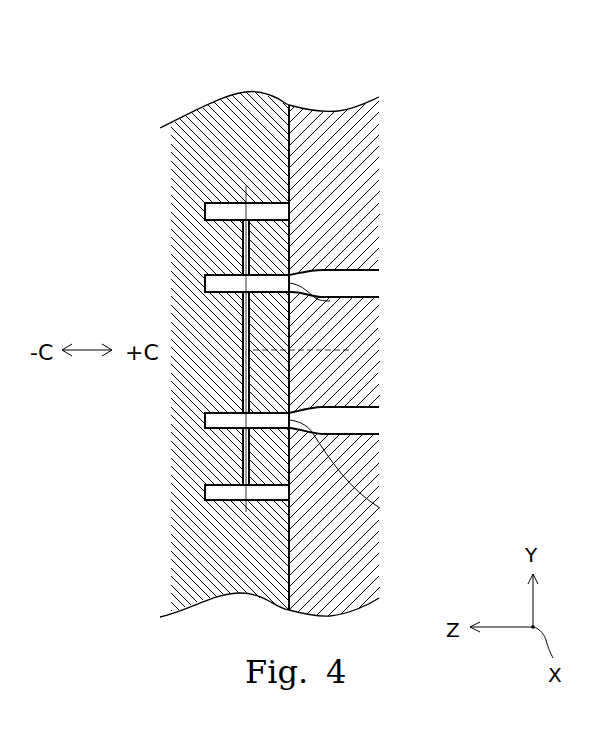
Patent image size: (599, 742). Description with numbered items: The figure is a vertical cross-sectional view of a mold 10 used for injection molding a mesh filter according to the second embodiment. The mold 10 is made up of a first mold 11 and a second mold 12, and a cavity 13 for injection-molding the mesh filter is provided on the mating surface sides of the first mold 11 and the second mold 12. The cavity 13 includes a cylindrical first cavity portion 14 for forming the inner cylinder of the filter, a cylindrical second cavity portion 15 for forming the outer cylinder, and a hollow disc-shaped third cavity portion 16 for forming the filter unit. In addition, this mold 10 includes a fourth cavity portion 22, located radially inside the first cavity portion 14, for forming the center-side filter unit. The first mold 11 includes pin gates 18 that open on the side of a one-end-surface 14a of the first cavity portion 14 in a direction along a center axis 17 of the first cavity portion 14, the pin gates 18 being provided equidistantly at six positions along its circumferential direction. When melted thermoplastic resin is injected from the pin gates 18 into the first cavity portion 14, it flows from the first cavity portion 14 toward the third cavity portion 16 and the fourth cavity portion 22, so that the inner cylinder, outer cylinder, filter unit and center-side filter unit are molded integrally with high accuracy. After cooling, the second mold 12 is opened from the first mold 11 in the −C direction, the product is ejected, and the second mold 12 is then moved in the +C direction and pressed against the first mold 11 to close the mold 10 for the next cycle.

The mold 10 is at (356, 101).
The first mold 11 is at (337, 139).
The second mold 12 is at (184, 139).
The cavity 13 is at (93, 364).
The first cavity portion 14 is at (217, 418).
The one-end-surface 14a is at (330, 301).
The second cavity portion 15 is at (207, 495).
The third cavity portion 16 is at (233, 456).
The center axis 17 is at (246, 322).
The pin gates 18 is at (333, 270).
The fourth cavity portion 22 is at (246, 372).